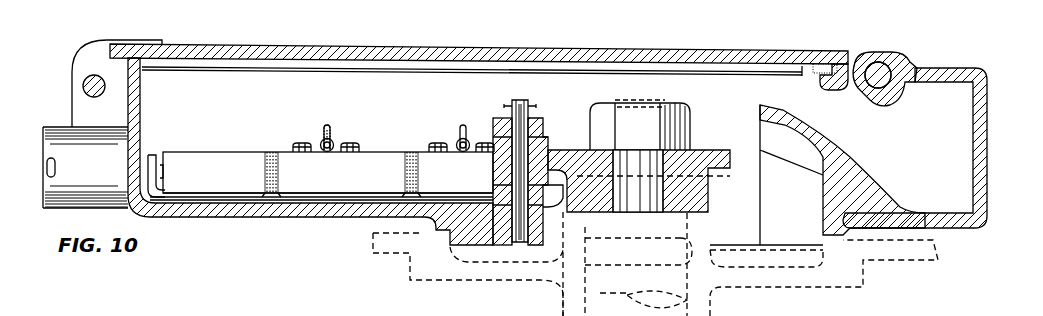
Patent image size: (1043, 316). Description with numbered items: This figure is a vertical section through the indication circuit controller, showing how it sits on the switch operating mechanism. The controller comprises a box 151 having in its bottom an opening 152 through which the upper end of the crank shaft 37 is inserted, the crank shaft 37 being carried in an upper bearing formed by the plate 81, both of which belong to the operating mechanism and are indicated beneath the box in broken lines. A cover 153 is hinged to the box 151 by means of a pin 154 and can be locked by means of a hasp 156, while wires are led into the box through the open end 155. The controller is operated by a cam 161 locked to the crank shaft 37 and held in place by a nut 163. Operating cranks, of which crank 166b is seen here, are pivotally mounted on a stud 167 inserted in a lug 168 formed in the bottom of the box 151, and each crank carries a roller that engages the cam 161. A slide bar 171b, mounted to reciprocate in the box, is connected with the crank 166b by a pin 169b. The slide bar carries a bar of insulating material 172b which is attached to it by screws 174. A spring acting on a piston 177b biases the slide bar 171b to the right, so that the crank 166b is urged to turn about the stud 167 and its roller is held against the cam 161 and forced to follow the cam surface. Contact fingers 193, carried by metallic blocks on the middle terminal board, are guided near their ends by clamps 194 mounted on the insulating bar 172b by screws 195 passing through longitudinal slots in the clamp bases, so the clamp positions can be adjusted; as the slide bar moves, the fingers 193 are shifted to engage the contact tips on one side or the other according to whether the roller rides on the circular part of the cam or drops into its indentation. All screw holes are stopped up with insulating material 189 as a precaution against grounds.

The cover 153 is at (510, 51).
The pin 154 is at (83, 88).
The open end 155 is at (980, 150).
The hasp 156 is at (897, 68).
The box 151 is at (355, 215).
The opening 152 is at (823, 219).
The piston 177b is at (147, 165).
The slide bar 171b is at (305, 198).
The bar of insulating material 172b is at (385, 160).
The screws 174 is at (265, 179).
The insulating material 189 is at (276, 158).
The screws 195 is at (304, 143).
The contact fingers 193 is at (328, 125).
The clamps 194 is at (333, 142).
The stud 167 is at (533, 111).
The operating crank 166b is at (575, 148).
The lug 168 is at (497, 240).
The pin 169b is at (548, 207).
The cam 161 is at (728, 150).
The nut 163 is at (690, 120).
The plate 81 is at (543, 282).
The crank shaft 37 is at (665, 278).